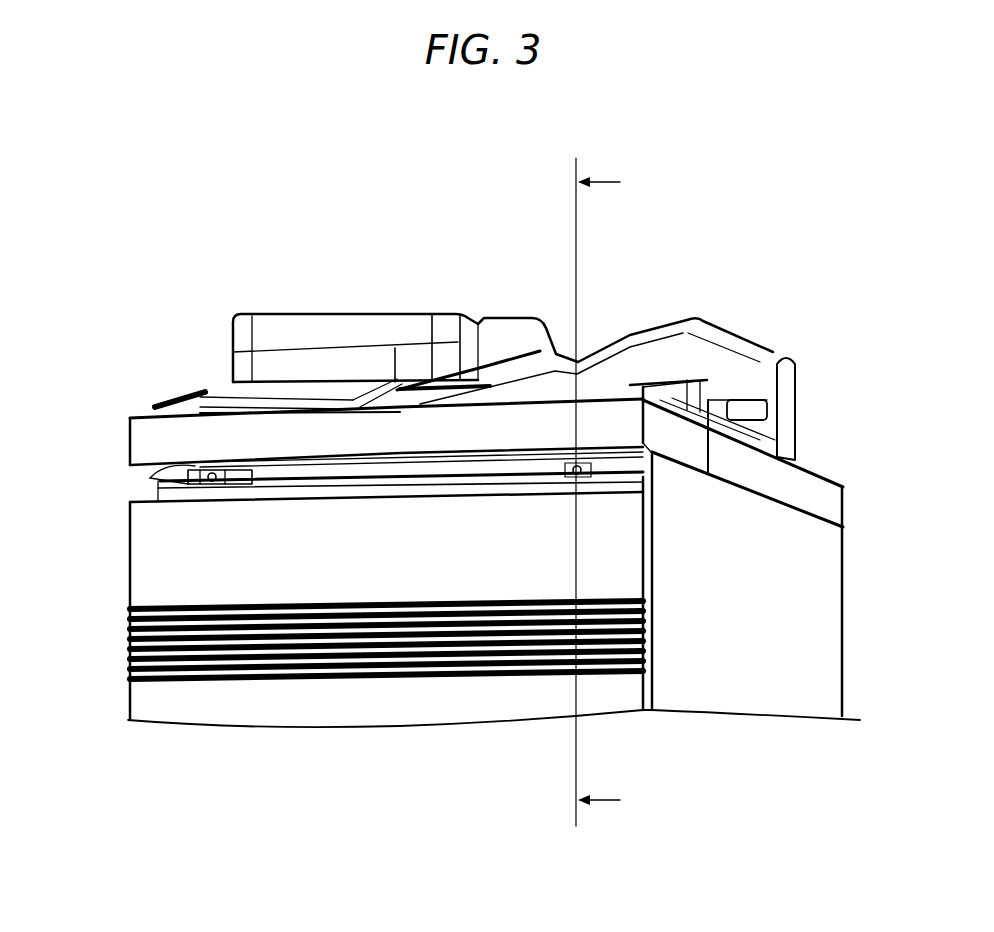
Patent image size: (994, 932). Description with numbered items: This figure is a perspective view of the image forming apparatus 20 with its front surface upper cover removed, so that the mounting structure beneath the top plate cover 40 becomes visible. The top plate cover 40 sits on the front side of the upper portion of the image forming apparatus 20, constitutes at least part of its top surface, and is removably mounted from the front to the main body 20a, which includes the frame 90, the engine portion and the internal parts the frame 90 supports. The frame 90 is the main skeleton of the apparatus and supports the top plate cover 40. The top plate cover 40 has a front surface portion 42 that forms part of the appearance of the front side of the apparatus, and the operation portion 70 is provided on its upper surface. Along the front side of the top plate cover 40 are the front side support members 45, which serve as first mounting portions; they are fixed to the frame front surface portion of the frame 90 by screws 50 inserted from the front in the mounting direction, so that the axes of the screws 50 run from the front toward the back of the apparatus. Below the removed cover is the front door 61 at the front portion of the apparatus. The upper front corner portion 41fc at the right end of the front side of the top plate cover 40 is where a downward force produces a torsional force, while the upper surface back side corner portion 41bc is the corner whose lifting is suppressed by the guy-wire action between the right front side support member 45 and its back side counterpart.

The image forming apparatus 20 is at (485, 238).
The main body 20a is at (780, 620).
The top plate cover 40 is at (145, 447).
The upper front corner portion 41fc is at (631, 386).
The upper surface back side corner portion 41bc is at (716, 412).
The front surface portion 42 is at (126, 417).
The front side support members 45 is at (157, 480).
The screws 50 is at (213, 482).
The front door 61 is at (187, 576).
The operation portion 70 is at (165, 402).
The frame 90 is at (236, 480).